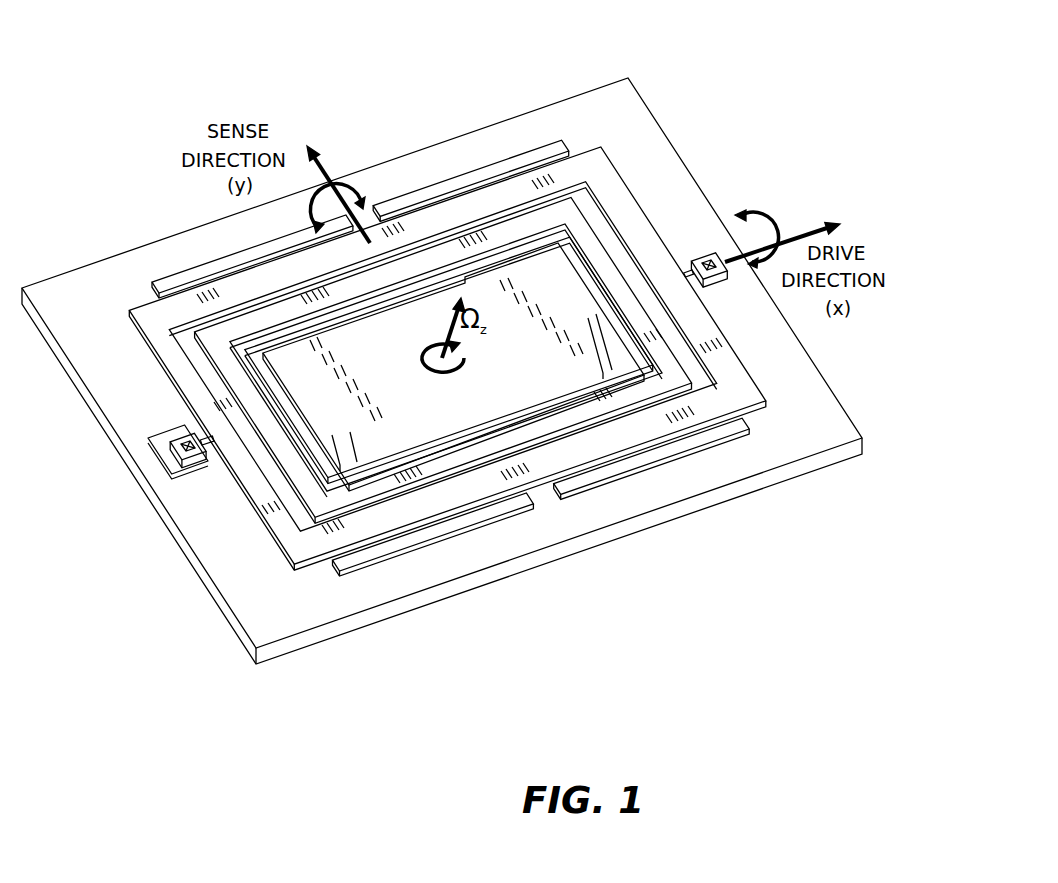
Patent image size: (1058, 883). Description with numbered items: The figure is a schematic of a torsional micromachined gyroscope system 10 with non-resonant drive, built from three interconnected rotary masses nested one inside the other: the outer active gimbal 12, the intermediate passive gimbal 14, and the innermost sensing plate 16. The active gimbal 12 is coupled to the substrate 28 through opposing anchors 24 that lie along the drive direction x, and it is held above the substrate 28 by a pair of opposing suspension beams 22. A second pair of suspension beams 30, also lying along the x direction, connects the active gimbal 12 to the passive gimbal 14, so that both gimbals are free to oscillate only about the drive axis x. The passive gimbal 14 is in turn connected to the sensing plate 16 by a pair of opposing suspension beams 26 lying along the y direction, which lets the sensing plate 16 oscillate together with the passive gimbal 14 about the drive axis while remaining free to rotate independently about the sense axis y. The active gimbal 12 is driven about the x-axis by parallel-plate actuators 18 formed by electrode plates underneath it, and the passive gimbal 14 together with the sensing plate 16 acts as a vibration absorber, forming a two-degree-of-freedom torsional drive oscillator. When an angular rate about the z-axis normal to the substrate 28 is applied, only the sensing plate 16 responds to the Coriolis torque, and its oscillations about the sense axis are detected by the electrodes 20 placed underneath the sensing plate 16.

The torsional gyroscope system 10 is at (487, 100).
The active gimbal 12 is at (295, 548).
The passive gimbal 14 is at (363, 492).
The sensing plate 16 is at (313, 437).
The parallel-plate actuators 18 is at (442, 371).
The electrodes 20 is at (612, 378).
The suspension beams 22 is at (698, 258).
The anchors 24 is at (724, 282).
The suspension beams 26 is at (408, 290).
The substrate 28 is at (314, 610).
The suspension beams 30 is at (634, 290).